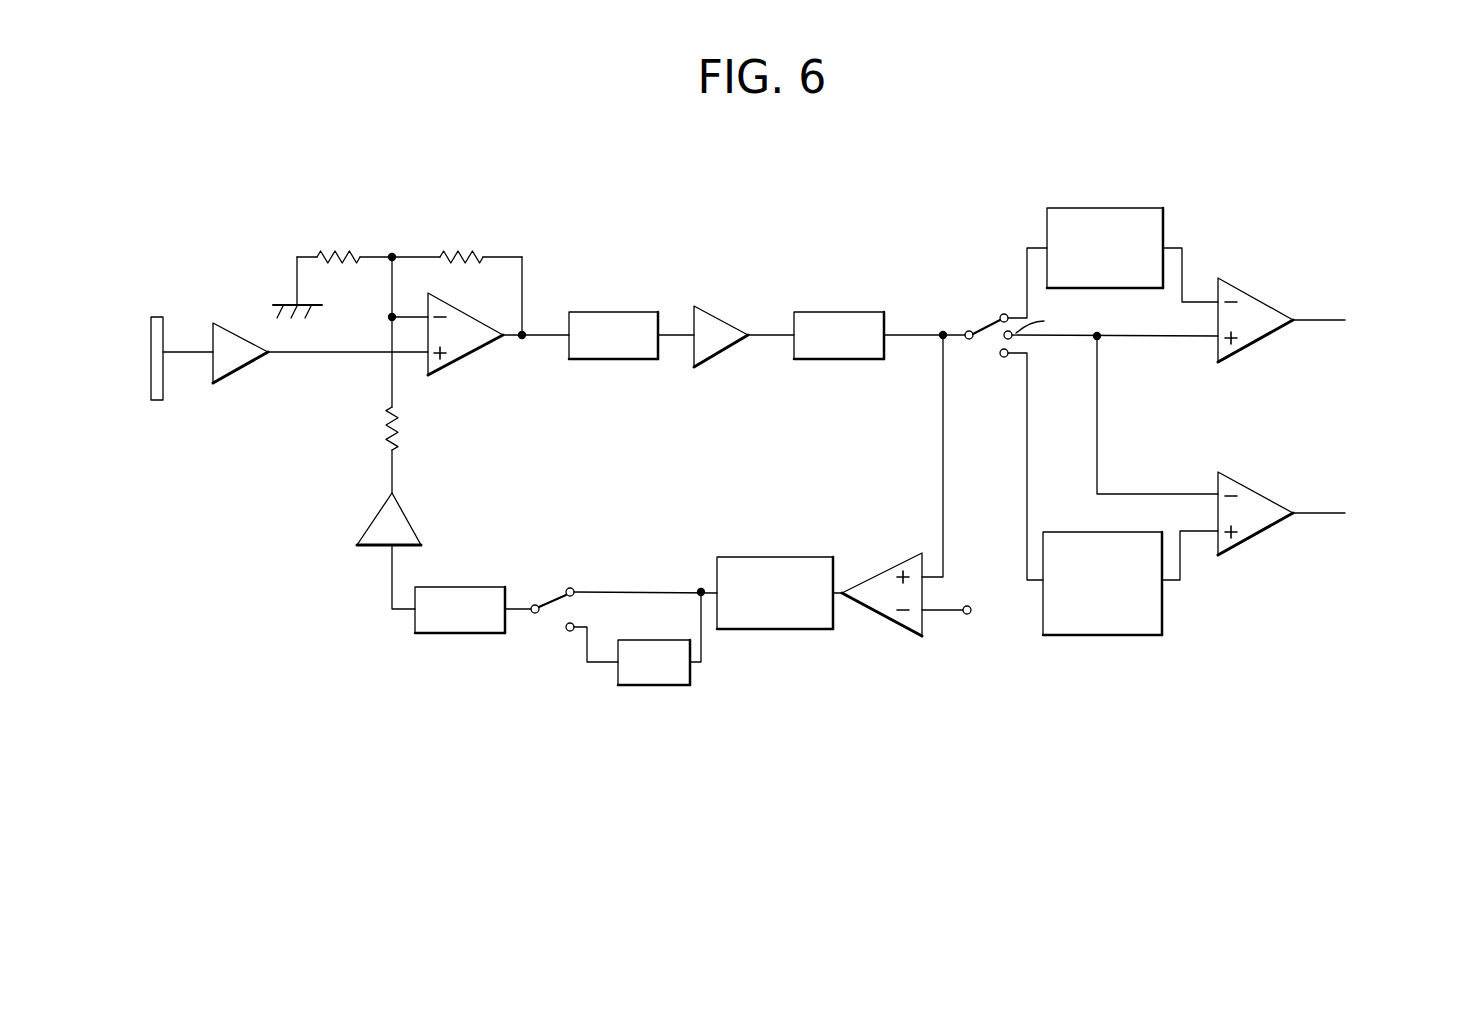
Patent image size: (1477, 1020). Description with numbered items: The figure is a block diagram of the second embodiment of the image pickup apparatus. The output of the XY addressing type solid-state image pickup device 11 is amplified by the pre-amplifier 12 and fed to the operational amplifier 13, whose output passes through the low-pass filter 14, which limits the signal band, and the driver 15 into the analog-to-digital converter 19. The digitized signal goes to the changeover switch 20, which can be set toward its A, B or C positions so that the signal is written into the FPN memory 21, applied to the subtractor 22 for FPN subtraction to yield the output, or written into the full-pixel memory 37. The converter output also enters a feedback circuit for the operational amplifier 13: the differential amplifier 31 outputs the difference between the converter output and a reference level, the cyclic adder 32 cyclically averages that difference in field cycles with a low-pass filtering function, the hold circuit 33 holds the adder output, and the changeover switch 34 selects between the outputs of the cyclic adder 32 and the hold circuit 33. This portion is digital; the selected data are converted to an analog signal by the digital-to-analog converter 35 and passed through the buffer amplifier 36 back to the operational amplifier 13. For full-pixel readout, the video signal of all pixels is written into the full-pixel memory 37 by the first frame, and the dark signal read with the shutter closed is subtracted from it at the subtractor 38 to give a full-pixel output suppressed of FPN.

The XY addressing type solid-state image pickup device 11 is at (156, 316).
The pre-amplifier 12 is at (230, 325).
The operational amplifier 13 is at (455, 365).
The low-pass filter 14 is at (625, 311).
The driver of analog-to-digital converter 15 is at (712, 312).
The analog-to-digital converter 19 is at (838, 311).
The changeover switch 20 is at (980, 326).
The FPN memory 21 is at (1105, 207).
The subtractor 22 is at (1240, 286).
The differential amplifier 31 is at (882, 620).
The cyclic adder 32 is at (785, 631).
The hold circuit 33 is at (665, 687).
The changeover switch 34 is at (548, 622).
The digital-to-analog converter 35 is at (462, 636).
The buffer amplifier 36 is at (372, 520).
The full-pixel memory 37 is at (1105, 637).
The subtractor 38 is at (1258, 535).